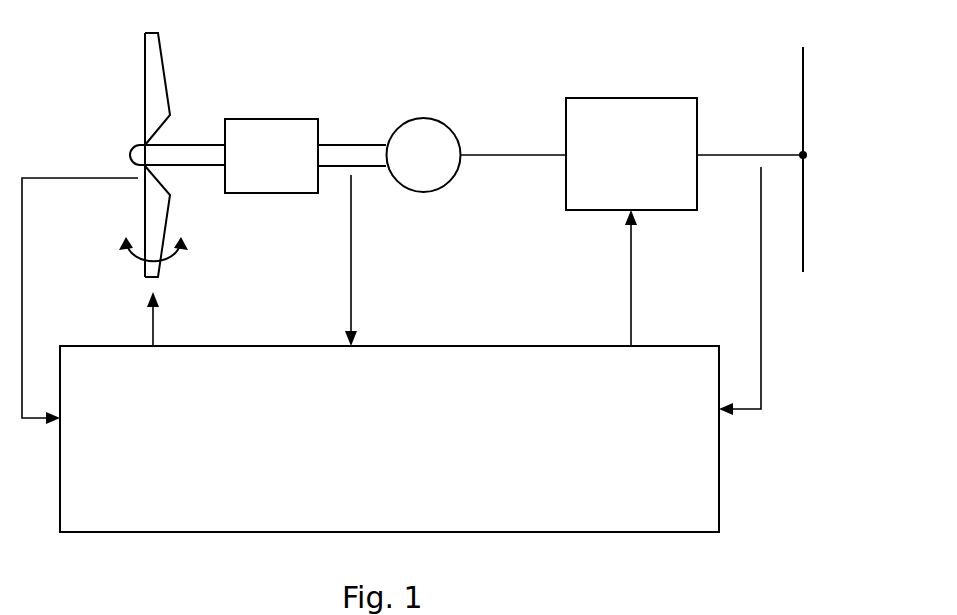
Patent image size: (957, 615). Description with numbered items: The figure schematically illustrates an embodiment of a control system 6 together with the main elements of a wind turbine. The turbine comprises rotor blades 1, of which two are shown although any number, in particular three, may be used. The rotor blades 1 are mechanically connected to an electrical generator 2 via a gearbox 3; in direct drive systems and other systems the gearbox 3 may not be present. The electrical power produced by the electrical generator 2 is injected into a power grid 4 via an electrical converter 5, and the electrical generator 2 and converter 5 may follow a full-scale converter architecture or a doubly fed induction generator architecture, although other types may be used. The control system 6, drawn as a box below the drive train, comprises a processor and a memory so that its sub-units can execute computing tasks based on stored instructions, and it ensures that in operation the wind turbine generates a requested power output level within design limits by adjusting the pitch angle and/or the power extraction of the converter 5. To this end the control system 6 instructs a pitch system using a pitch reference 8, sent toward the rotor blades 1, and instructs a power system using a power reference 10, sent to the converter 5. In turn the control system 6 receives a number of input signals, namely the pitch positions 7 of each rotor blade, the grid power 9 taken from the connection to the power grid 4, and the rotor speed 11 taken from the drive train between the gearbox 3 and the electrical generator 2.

The rotor blades 1 is at (163, 62).
The electrical generator 2 is at (442, 120).
The gearbox 3 is at (257, 117).
The power grid 4 is at (803, 98).
The electrical converter 5 is at (697, 122).
The control system 6 is at (472, 446).
The pitch positions 7 is at (22, 335).
The pitch reference 8 is at (155, 323).
The grid power 9 is at (761, 378).
The power reference 10 is at (631, 313).
The rotor speed 11 is at (351, 312).